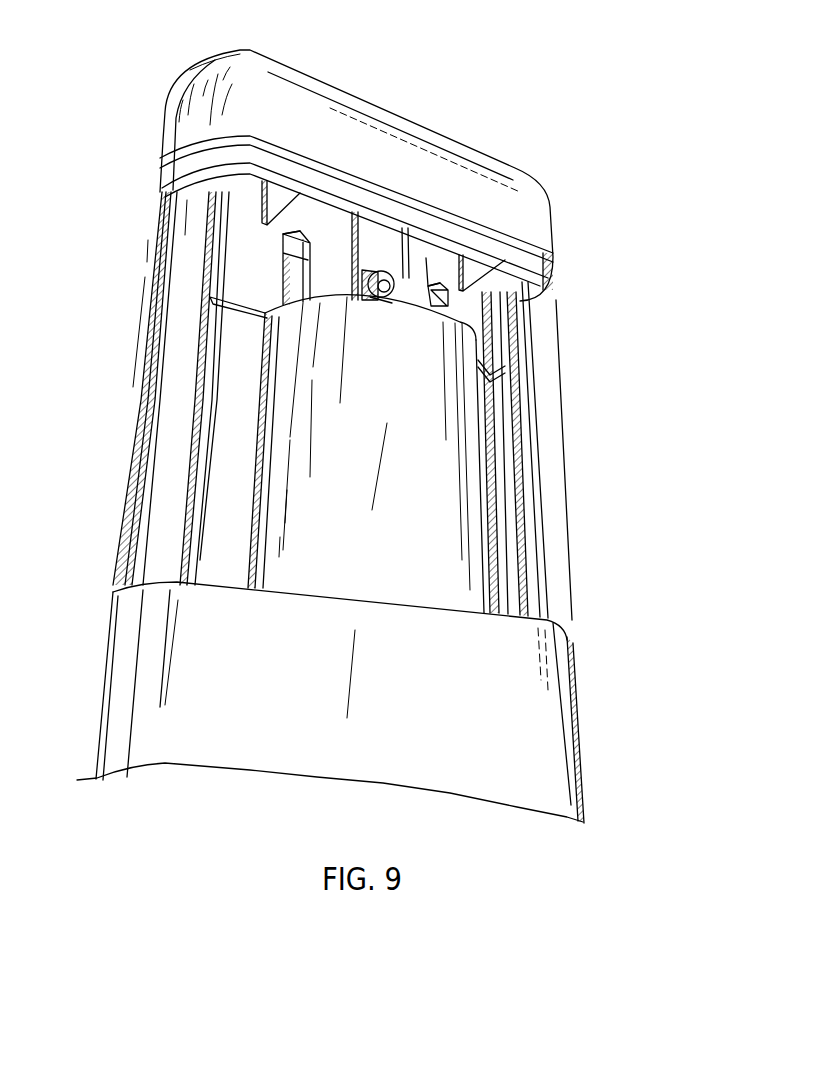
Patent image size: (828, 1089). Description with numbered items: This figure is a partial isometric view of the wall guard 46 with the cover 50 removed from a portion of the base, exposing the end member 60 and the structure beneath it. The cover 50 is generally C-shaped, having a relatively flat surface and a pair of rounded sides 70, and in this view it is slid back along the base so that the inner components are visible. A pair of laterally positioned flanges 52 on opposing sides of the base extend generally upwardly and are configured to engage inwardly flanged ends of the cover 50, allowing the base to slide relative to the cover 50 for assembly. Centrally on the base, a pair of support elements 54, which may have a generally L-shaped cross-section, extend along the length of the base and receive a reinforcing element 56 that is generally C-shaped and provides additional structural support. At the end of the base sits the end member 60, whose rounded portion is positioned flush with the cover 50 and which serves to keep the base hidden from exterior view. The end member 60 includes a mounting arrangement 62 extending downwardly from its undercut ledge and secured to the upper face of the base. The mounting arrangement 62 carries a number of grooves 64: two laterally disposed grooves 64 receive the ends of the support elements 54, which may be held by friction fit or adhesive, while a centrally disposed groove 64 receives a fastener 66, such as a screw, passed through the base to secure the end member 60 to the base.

The wall guard 46 is at (590, 136).
The cover 50 is at (513, 673).
The flanges 52 is at (182, 230).
The support elements 54 is at (308, 262).
The reinforcing element 56 is at (410, 437).
The end member 60 is at (290, 100).
The mounting arrangement 62 is at (248, 242).
The grooves 64 is at (303, 233).
The fastener 66 is at (400, 275).
The rounded sides 70 is at (108, 650).